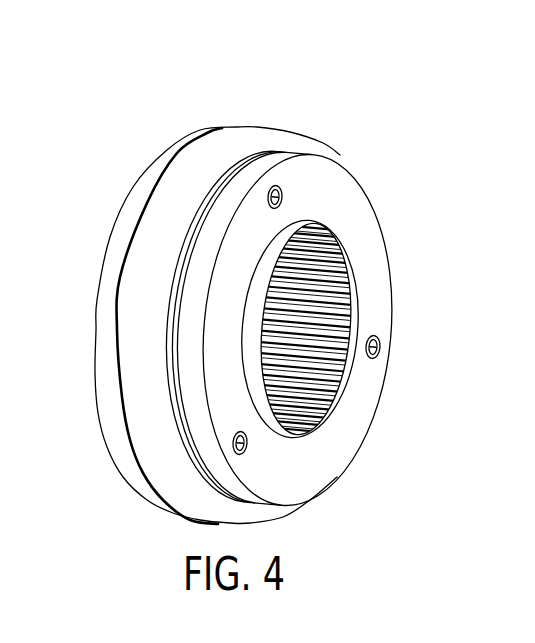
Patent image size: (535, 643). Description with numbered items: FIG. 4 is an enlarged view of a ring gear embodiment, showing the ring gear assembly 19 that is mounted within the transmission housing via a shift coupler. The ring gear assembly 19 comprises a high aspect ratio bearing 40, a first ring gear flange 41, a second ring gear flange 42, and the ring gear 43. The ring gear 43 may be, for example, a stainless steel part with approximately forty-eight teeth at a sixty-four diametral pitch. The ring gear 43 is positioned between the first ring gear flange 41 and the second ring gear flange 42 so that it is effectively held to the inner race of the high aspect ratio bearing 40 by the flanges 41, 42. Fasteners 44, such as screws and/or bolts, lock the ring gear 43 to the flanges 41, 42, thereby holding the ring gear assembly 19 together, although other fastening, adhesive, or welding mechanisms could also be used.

The ring gear assembly 19 is at (93, 98).
The high aspect ratio bearing 40 is at (302, 143).
The first ring gear flange 41 is at (373, 258).
The second ring gear flange 42 is at (96, 328).
The ring gear 43 is at (320, 355).
The fasteners 44 is at (283, 192).